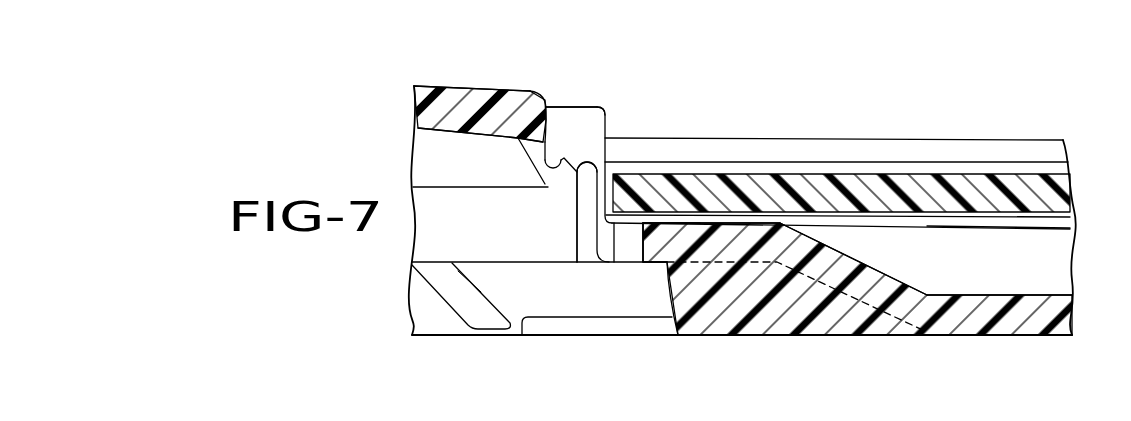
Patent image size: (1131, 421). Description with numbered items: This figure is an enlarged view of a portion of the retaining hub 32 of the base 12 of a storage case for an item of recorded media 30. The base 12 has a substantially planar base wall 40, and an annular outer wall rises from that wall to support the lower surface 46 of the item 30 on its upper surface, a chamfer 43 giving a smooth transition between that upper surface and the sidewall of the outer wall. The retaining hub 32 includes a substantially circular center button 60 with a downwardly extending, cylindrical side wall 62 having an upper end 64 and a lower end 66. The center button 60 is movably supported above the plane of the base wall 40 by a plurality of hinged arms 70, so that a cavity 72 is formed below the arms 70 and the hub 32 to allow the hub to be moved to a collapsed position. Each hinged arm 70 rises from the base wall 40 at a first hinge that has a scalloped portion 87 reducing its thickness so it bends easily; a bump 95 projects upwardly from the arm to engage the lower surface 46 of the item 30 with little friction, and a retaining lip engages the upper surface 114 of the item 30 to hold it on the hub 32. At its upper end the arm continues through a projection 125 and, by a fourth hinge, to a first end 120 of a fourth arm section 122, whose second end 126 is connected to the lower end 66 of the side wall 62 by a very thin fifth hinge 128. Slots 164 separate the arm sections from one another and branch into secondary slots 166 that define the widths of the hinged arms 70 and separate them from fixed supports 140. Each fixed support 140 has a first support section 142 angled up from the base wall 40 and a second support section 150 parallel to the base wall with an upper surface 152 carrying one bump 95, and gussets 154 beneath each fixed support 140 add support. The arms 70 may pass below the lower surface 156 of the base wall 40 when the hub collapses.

The base 12 is at (871, 241).
The item of recorded media 30 is at (945, 168).
The retaining hub 32 is at (556, 57).
The base wall 40 is at (1037, 298).
The chamfer 43 is at (845, 220).
The lower surface 46 is at (928, 226).
The center button 60 is at (440, 88).
The side wall 62 is at (540, 157).
The upper end 64 is at (530, 95).
The lower end 66 is at (533, 175).
The hinged arm 70 is at (599, 298).
The cavity 72 is at (433, 315).
The scalloped portion 87 is at (543, 323).
The bump 95 is at (708, 217).
The upper surface 114 is at (889, 152).
The first end 120 is at (558, 172).
The fourth arm section 122 is at (574, 200).
The projection 125 is at (590, 128).
The second end 126 is at (563, 200).
The fifth hinge 128 is at (547, 182).
The fixed support 140 is at (900, 272).
The first support section 142 is at (866, 312).
The second support section 150 is at (668, 250).
The upper surface 152 is at (753, 220).
The gusset 154 is at (727, 303).
The lower surface 156 is at (960, 334).
The slot 164 is at (598, 139).
The secondary slot 166 is at (487, 318).